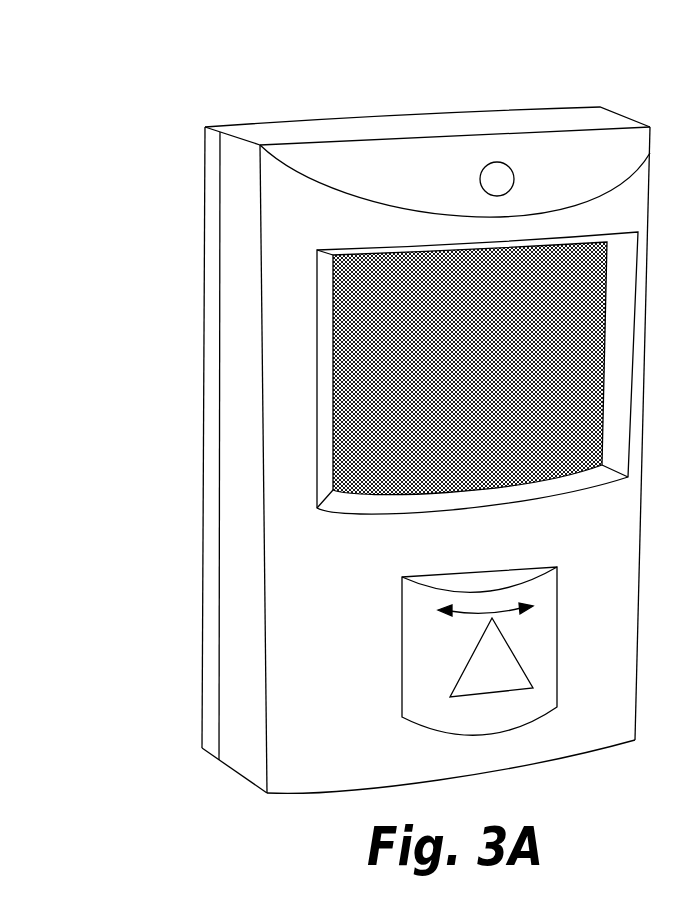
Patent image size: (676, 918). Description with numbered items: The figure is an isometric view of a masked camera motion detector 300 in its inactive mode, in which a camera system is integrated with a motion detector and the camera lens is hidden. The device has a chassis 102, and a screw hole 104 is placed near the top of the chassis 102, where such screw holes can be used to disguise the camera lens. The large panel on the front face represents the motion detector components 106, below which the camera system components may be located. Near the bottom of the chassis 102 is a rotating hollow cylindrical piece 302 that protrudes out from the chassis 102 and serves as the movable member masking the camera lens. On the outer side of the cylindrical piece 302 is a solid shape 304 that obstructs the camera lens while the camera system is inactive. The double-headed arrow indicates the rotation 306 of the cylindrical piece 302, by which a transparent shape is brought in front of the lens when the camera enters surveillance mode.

The masked camera motion detector 300 is at (155, 95).
The chassis 102 is at (311, 575).
The screw hole 104 is at (495, 180).
The motion detector components 106 is at (477, 373).
The rotating hollow cylindrical piece 302 is at (443, 655).
The solid shape 304 is at (473, 686).
The rotation of the cylindrical piece 306 is at (508, 611).